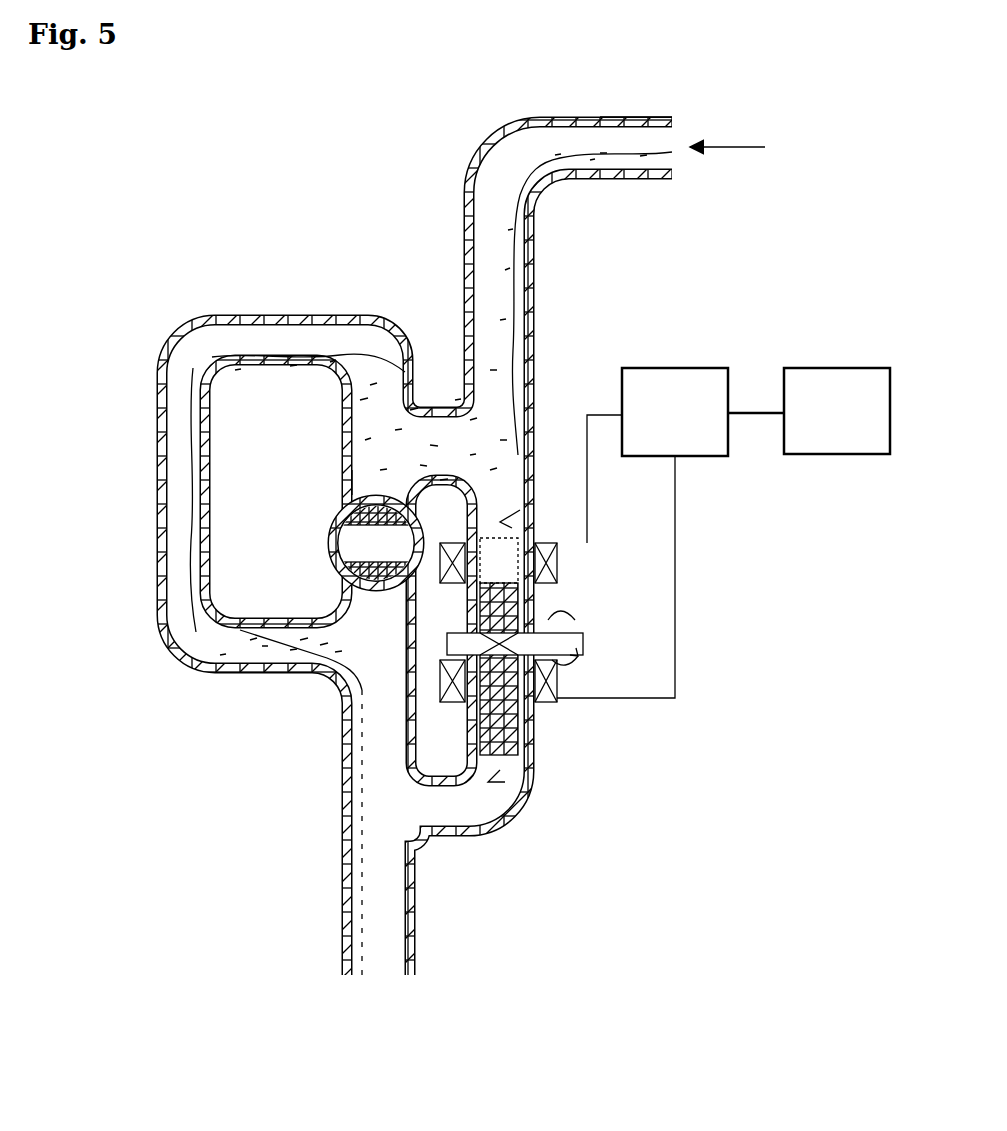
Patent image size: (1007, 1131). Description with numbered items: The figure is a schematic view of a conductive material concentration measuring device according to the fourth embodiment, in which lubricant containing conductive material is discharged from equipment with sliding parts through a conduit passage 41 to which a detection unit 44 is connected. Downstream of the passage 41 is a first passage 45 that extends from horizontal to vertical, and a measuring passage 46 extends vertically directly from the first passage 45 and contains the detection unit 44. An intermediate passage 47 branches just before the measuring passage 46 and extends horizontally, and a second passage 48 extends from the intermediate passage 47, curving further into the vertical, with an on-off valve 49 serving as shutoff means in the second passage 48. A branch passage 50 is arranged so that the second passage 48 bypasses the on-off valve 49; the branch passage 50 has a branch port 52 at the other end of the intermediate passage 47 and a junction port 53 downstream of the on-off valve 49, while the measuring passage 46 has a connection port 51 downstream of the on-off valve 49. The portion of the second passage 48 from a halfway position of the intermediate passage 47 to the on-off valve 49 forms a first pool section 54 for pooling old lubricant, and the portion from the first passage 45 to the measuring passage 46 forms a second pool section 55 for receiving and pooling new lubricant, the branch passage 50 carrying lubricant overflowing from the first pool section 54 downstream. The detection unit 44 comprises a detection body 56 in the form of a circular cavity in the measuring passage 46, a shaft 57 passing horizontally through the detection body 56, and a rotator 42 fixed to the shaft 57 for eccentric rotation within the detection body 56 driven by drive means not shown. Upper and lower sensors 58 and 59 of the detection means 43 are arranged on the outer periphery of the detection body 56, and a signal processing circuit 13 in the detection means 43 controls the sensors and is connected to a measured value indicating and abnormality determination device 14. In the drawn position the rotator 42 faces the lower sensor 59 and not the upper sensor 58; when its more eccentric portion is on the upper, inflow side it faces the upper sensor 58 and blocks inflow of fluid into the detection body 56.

The signal processing circuit 13 is at (680, 378).
The measured value indicating and abnormality determination device 14 is at (835, 378).
The passage 41 is at (436, 163).
The rotator 42 is at (535, 735).
The detection means 43 is at (574, 574).
The detection unit 44 is at (630, 706).
The first passage 45 is at (463, 203).
The measuring passage 46 is at (520, 497).
The intermediate passage 47 is at (440, 405).
The second passage 48 is at (345, 492).
The on-off valve 49 is at (335, 560).
The branch passage 50 is at (157, 572).
The connection port 51 is at (413, 812).
The branch port 52 is at (384, 396).
The junction port 53 is at (352, 638).
The first pool section 54 is at (386, 444).
The second pool section 55 is at (497, 400).
The detection body 56 is at (560, 555).
The shaft 57 is at (560, 650).
The upper sensor 58 is at (555, 540).
The lower sensor 59 is at (545, 700).